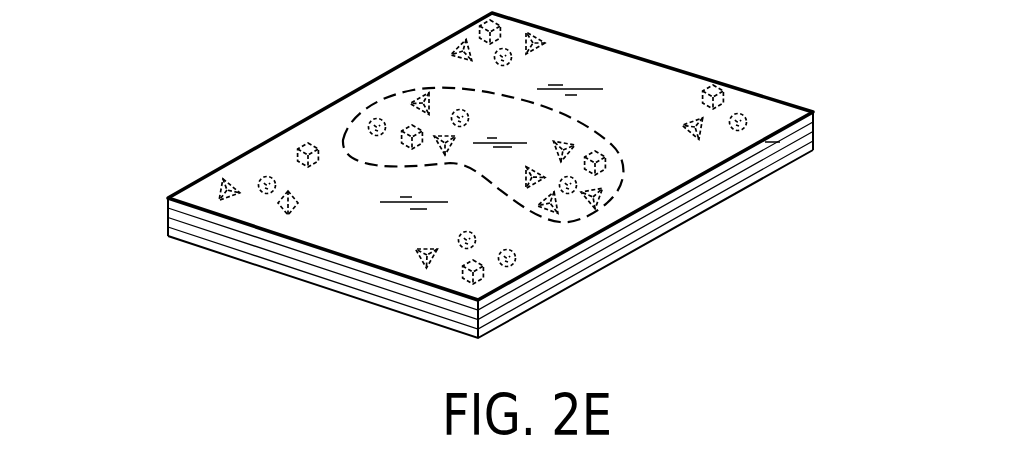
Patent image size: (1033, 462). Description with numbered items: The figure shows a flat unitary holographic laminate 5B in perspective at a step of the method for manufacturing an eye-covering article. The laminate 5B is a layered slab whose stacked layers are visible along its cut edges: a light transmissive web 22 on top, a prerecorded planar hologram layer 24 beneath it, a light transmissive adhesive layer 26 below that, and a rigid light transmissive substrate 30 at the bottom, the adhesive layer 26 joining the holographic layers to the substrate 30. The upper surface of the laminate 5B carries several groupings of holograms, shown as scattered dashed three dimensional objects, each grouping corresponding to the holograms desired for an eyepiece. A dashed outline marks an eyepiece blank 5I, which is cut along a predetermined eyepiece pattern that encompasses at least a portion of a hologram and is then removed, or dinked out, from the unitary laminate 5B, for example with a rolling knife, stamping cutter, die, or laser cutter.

The light transmissive web 22 is at (814, 112).
The planar hologram layer 24 is at (814, 127).
The light transmissive adhesive layer 26 is at (814, 137).
The light transmissive substrate 30 is at (814, 148).
The eyepiece blank 5I is at (602, 134).
The flat unitary holographic laminate 5B is at (158, 275).